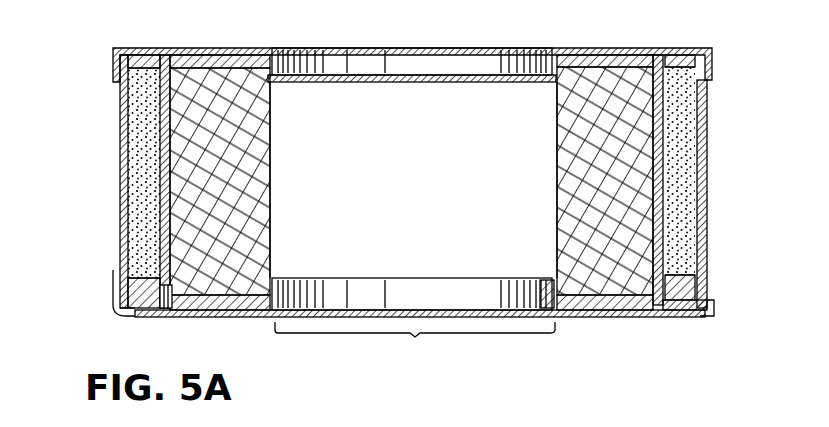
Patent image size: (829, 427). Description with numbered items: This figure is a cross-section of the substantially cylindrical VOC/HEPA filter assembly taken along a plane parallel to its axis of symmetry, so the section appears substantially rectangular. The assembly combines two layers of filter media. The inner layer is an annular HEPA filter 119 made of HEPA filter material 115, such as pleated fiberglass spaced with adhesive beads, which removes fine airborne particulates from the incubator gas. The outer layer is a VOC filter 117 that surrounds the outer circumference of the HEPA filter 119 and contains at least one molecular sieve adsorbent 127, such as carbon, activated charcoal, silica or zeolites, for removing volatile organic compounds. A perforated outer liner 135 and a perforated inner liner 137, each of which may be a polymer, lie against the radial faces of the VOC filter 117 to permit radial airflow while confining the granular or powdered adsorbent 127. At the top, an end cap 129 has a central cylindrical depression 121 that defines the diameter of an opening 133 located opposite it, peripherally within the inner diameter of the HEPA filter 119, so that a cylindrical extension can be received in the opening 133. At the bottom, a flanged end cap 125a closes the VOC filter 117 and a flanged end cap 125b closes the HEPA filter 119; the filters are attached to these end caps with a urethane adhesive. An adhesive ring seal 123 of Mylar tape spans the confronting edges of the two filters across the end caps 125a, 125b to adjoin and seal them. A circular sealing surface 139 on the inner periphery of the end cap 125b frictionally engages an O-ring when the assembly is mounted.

The HEPA filter material 115 is at (262, 153).
The VOC filter 117 is at (118, 222).
The HEPA filter 119 is at (270, 192).
The central cylindrical depression 121 is at (443, 70).
The adhesive ring seal 123 is at (603, 318).
The flanged end cap 125a is at (700, 318).
The flanged end cap 125b is at (645, 318).
The molecular sieve adsorbent 127 is at (131, 168).
The end cap 129 is at (193, 50).
The opening 133 is at (413, 323).
The perforated outer liner 135 is at (119, 243).
The perforated inner liner 137 is at (126, 104).
The circular sealing surface 139 is at (545, 292).